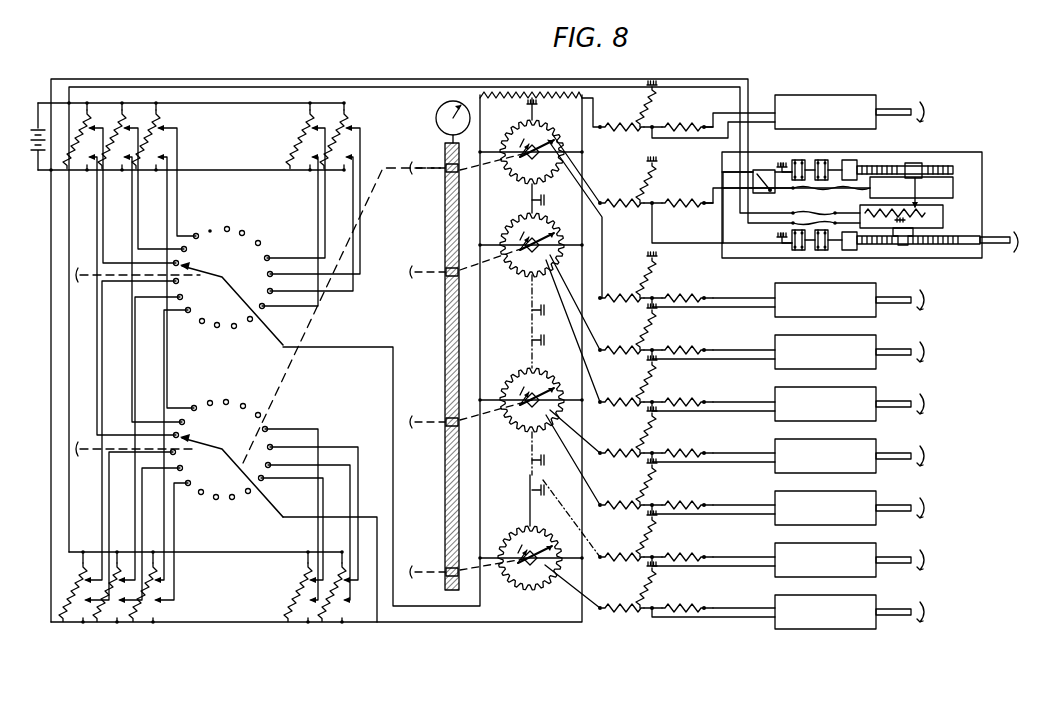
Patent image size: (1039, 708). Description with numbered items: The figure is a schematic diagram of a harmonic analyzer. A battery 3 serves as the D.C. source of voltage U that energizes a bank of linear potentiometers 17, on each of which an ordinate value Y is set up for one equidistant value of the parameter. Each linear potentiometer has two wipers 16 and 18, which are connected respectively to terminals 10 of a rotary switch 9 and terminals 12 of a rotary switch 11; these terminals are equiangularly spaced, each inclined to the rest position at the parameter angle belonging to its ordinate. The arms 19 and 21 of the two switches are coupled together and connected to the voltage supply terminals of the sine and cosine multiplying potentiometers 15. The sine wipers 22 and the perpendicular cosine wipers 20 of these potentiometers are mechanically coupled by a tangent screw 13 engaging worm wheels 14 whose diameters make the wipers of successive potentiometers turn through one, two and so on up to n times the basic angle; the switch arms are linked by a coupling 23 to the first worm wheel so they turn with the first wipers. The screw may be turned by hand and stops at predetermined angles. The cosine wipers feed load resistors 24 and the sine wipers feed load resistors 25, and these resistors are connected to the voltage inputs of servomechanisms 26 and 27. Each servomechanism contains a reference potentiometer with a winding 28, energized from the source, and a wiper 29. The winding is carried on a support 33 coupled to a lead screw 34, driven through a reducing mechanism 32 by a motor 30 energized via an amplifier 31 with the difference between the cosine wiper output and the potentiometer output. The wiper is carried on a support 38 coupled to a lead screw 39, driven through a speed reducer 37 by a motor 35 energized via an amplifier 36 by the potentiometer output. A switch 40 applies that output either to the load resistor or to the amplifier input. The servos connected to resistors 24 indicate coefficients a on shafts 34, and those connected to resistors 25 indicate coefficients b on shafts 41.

The voltage source 3 is at (34, 180).
The rotary switch 9 is at (241, 234).
The terminals of rotary switch 10 is at (196, 233).
The rotary switch 11 is at (236, 406).
The terminals of rotary switch 12 is at (194, 405).
The tangent screw 13 is at (445, 358).
The worm wheels 14 is at (430, 585).
The sine and cosine multiplying potentiometers 15 is at (522, 132).
The wiper of linear potentiometer 16 is at (90, 118).
The linear potentiometer 17 is at (86, 166).
The wiper of linear potentiometer 18 is at (88, 166).
The arm of switch 19 is at (179, 303).
The cosine wipers 20 is at (517, 144).
The arm of switch 21 is at (179, 475).
The sine wipers 22 is at (558, 135).
The coupling 23 is at (286, 376).
The load resistors 24 is at (654, 114).
The load resistors 25 is at (652, 282).
The servomechanisms 26 is at (906, 108).
The servomechanisms 27 is at (775, 288).
The reference potentiometer winding 28 is at (940, 204).
The wiper 29 is at (936, 187).
The motor 30 is at (822, 250).
The amplifier 31 is at (796, 250).
The reducing mechanism 32 is at (852, 250).
The support 33 is at (936, 218).
The lead screw 34 is at (900, 624).
The motor 35 is at (824, 160).
The amplifier 36 is at (800, 160).
The gear 37 is at (852, 160).
The support 38 is at (926, 174).
The lead screw 39 is at (904, 166).
The switch 40 is at (758, 170).
The shaft 41 is at (893, 302).